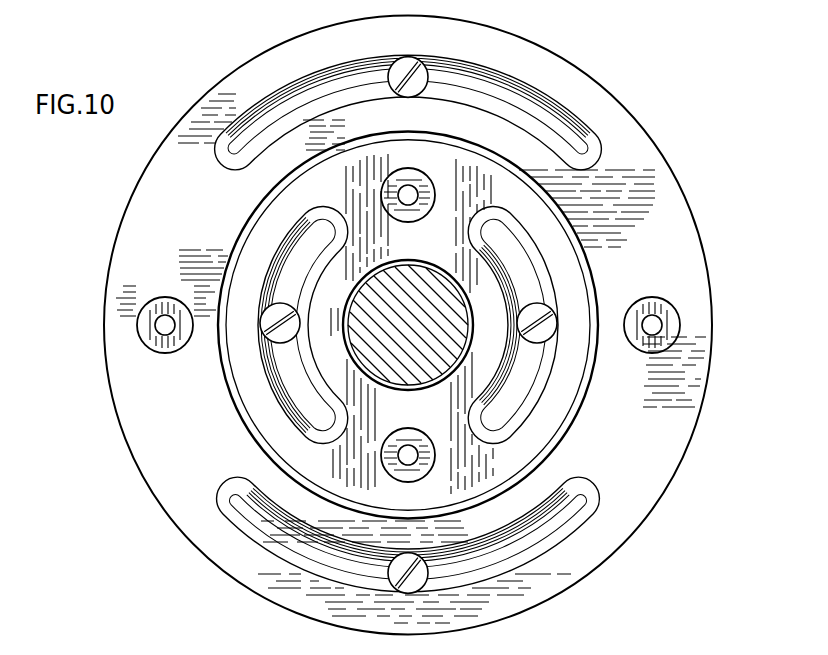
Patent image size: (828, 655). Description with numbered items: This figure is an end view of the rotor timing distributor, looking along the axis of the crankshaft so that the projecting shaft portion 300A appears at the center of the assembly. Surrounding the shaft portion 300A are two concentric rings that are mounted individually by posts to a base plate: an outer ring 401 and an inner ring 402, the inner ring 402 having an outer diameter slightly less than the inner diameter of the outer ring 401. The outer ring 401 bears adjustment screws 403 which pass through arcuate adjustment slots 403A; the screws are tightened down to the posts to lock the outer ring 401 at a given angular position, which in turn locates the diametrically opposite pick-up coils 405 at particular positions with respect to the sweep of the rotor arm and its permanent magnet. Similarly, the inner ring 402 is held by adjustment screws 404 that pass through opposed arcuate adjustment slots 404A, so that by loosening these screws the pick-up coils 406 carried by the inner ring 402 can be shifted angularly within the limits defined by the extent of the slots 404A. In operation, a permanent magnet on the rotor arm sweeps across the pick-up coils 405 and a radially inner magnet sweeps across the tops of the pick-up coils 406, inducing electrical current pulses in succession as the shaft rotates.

The outer ring 401 is at (673, 430).
The inner ring 402 is at (256, 399).
The shaft portion 300A is at (425, 286).
The adjustment screws 403 is at (406, 70).
The arcuate adjustment slots 403A is at (498, 88).
The adjustment screws 404 is at (273, 312).
The arcuate adjustment slots 404A is at (303, 372).
The pick-up coils 405 is at (172, 306).
The pick-up coils 406 is at (420, 190).